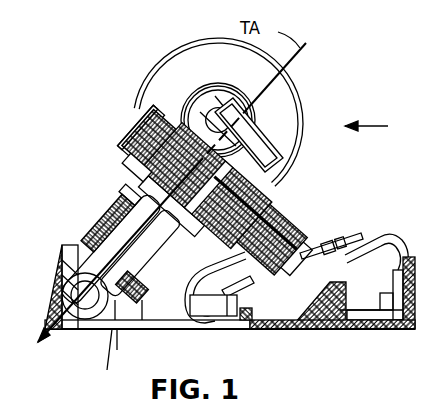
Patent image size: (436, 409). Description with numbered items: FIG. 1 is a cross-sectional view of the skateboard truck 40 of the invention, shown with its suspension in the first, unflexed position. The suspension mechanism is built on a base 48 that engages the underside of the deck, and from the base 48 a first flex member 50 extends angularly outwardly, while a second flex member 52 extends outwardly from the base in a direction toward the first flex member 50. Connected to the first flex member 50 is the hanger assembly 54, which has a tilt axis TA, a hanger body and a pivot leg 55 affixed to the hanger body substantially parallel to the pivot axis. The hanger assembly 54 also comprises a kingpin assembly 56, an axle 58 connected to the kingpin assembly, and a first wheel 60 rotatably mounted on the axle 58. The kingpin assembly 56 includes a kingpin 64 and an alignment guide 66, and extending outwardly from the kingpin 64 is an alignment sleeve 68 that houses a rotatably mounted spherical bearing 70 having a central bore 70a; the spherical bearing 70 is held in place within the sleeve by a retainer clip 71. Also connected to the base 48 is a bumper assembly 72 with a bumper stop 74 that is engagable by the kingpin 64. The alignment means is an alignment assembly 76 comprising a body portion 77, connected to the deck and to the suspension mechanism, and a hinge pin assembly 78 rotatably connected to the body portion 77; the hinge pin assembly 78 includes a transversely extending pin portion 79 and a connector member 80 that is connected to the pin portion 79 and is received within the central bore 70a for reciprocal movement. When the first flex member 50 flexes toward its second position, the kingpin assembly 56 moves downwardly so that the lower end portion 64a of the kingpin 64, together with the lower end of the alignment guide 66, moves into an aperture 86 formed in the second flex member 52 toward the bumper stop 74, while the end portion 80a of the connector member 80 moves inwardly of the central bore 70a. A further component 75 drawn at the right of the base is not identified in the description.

The truck 40 is at (379, 127).
The base 48 is at (243, 329).
The first flex member 50 is at (153, 275).
The second flex member 52 is at (385, 236).
The hanger assembly 54 is at (266, 134).
The pivot leg 55 is at (122, 195).
The kingpin assembly 56 is at (126, 118).
The axle 58 is at (206, 112).
The first wheel 60 is at (171, 70).
The kingpin 64 is at (126, 134).
The lower end portion of kingpin 64a is at (303, 252).
The alignment guide 66 is at (281, 275).
The alignment sleeve 68 is at (108, 225).
The spherical bearing 70 is at (97, 273).
The central bore 70a is at (94, 359).
The retainer clip 71 is at (139, 288).
The bumper assembly 72 is at (356, 337).
The bumper stop 74 is at (316, 322).
The wall 75 is at (409, 264).
The alignment assembly 76 is at (33, 352).
The body portion 77 is at (52, 312).
The hinge pin assembly 78 is at (83, 329).
The pin portion 79 is at (78, 285).
The connector member 80 is at (78, 245).
The end portion of connector member 80a is at (168, 330).
The aperture 86 is at (327, 250).